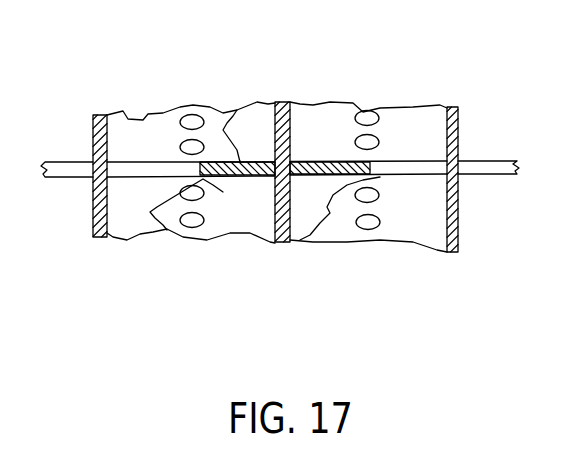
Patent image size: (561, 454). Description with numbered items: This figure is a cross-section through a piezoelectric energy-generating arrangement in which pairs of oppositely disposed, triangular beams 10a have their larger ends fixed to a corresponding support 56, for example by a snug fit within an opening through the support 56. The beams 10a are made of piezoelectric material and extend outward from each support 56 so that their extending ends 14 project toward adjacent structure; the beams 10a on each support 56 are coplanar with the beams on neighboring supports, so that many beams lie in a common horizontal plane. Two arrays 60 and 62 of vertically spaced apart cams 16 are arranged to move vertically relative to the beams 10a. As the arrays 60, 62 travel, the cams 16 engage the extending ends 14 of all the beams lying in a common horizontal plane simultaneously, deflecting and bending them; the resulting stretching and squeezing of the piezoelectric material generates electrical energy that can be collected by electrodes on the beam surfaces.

The triangular beam 10a is at (237, 110).
The extending end 14 is at (373, 158).
The cams 16 is at (190, 120).
The support 56 is at (290, 101).
The first array of cams 60 is at (257, 105).
The second array of cams 62 is at (378, 226).